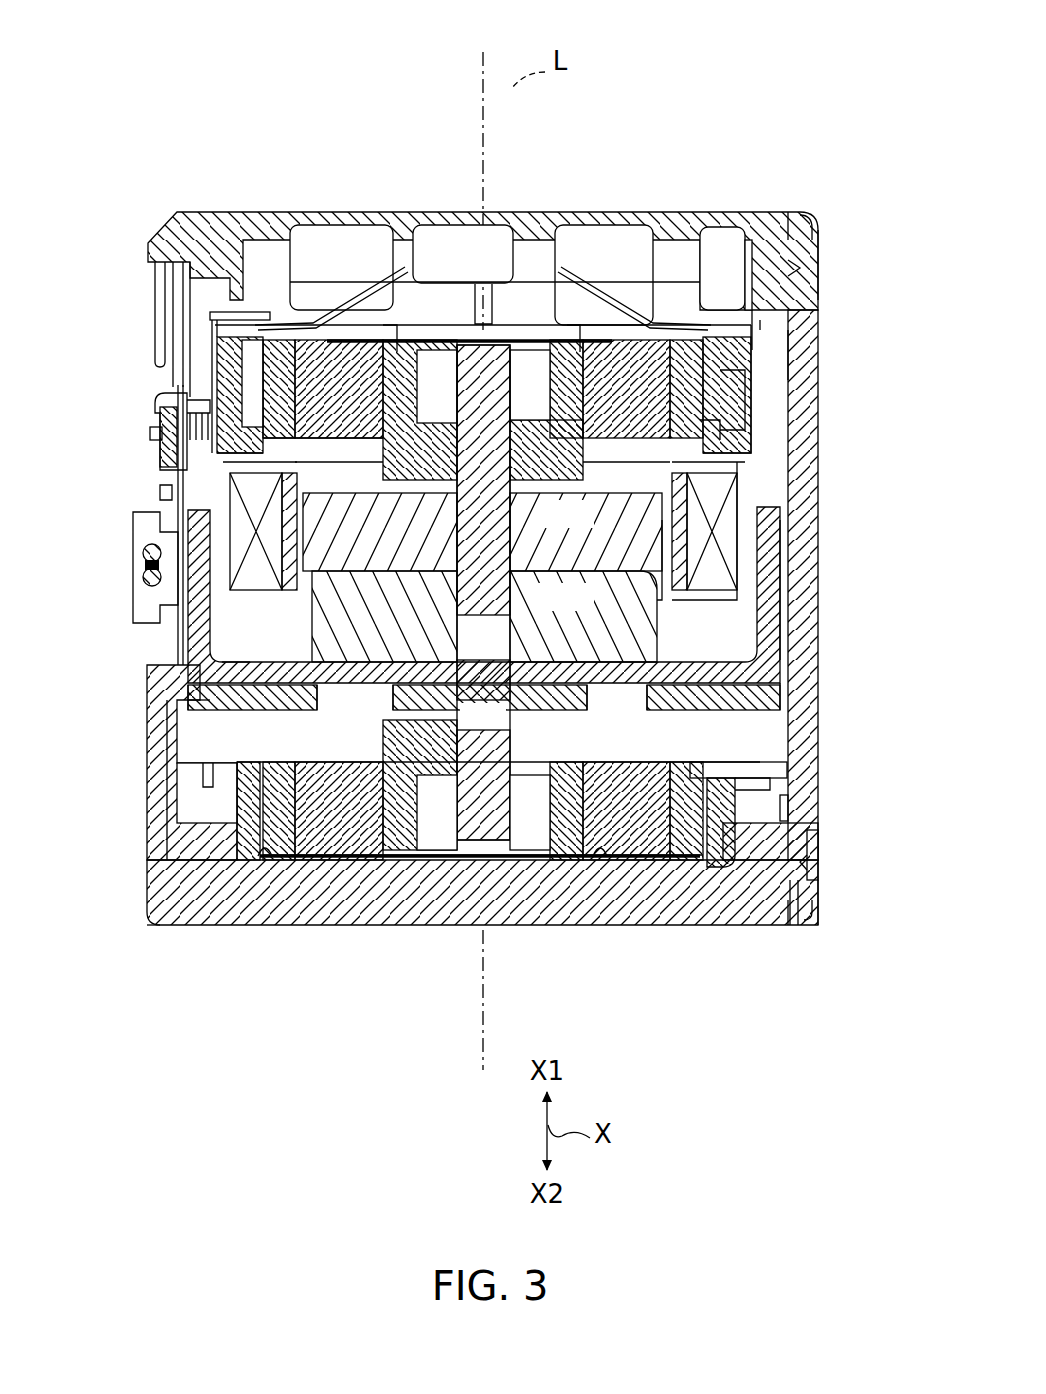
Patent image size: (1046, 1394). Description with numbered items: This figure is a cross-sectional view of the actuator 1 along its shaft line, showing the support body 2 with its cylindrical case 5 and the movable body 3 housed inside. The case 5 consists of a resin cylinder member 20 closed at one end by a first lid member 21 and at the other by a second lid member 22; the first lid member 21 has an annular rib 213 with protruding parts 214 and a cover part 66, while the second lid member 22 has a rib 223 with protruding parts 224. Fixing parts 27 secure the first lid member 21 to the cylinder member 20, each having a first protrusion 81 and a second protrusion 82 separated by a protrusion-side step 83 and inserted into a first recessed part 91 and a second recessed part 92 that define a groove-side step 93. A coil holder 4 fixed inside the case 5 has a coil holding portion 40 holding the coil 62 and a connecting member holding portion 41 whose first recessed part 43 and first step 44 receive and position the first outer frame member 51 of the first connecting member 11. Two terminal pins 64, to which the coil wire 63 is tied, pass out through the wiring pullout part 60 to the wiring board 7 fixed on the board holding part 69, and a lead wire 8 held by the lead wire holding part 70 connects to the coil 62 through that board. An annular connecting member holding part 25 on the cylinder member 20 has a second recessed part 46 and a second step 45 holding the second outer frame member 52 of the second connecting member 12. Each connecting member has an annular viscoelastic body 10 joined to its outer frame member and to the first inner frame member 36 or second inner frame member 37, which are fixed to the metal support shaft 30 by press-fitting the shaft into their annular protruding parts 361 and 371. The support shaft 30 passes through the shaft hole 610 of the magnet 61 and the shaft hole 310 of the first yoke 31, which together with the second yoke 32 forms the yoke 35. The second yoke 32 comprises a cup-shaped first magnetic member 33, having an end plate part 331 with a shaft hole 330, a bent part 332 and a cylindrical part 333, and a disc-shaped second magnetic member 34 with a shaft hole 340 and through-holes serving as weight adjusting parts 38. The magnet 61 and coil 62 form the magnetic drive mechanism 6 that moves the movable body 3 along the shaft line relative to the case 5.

The actuator 1 is at (108, 84).
The support body 2 is at (828, 352).
The movable body 3 is at (198, 716).
The coil holder 4 is at (845, 358).
The case 5 is at (822, 378).
The magnetic drive mechanism 6 is at (870, 592).
The wiring board 7 is at (168, 450).
The lead wire 8 is at (150, 577).
The viscoelastic body 10 is at (638, 330).
The first connecting member 11 is at (712, 134).
The second connecting member 12 is at (278, 990).
The cylinder member 20 is at (148, 825).
The first lid member 21 is at (215, 200).
The second lid member 22 is at (650, 938).
The connecting member holding part 25 is at (740, 770).
The fixing part 27 is at (842, 168).
The support shaft 30 is at (490, 340).
The first yoke 31 is at (652, 545).
The second yoke 32 is at (878, 660).
The first magnetic member 33 is at (770, 645).
The second magnetic member 34 is at (715, 688).
The yoke 35 is at (915, 555).
The first inner frame member 36 is at (400, 325).
The second inner frame member 37 is at (394, 850).
The weight adjusting part 38 is at (331, 705).
The coil holding portion 40 is at (702, 492).
The connecting member holding portion 41 is at (226, 325).
The first recessed part 43 is at (745, 385).
The first step 44 is at (738, 420).
The second step 45 is at (738, 778).
The second recessed part 46 is at (790, 815).
The first outer frame member 51 is at (700, 335).
The second outer frame member 52 is at (283, 855).
The wiring pullout part 60 is at (150, 397).
The magnet 61 is at (650, 610).
The coil 62 is at (715, 575).
The coil wire 63 is at (192, 388).
The terminal pins 64 is at (150, 437).
The cover part 66 is at (160, 318).
The board holding part 69 is at (162, 496).
The lead wire holding part 70 is at (135, 530).
The first protrusion 81 is at (820, 222).
The second protrusion 82 is at (805, 280).
The protrusion-side step 83 is at (810, 230).
The first recessed part 91 is at (795, 225).
The second recessed part 92 is at (795, 268).
The groove-side step 93 is at (800, 250).
The rib 213 is at (318, 325).
The protruding parts 214 is at (530, 341).
The rib 223 is at (692, 855).
The protruding parts 224 is at (228, 857).
The shaft hole 310 is at (512, 505).
The shaft hole 330 is at (512, 672).
The end plate part 331 is at (250, 660).
The bent part 332 is at (212, 690).
The cylindrical part 333 is at (172, 625).
The shaft hole 340 is at (505, 680).
The annular protruding part 361 is at (455, 325).
The annular protruding part 371 is at (445, 800).
The shaft hole 610 is at (512, 586).